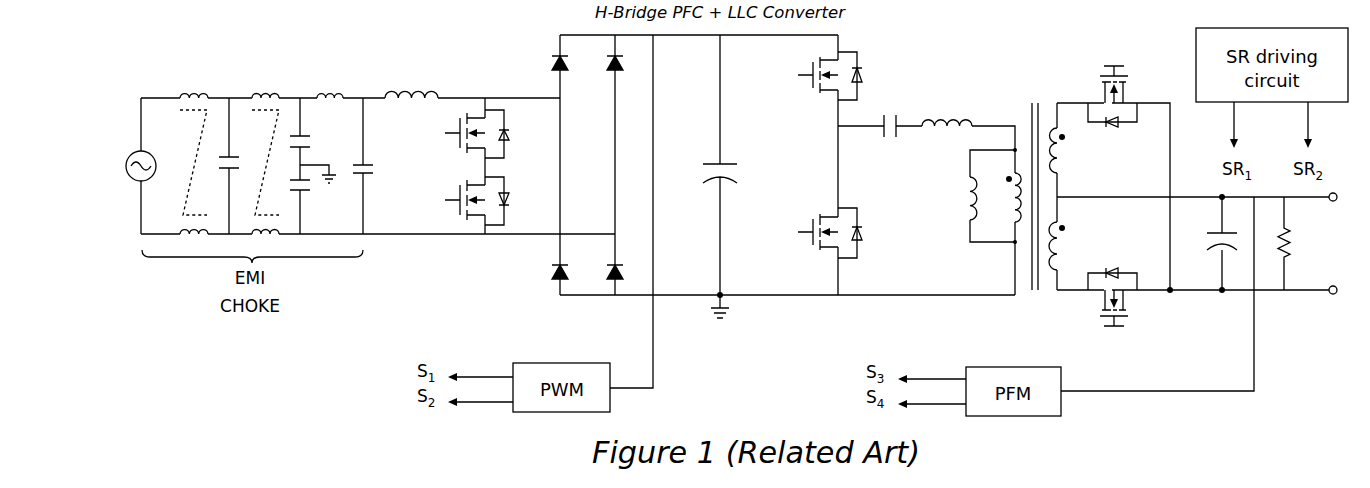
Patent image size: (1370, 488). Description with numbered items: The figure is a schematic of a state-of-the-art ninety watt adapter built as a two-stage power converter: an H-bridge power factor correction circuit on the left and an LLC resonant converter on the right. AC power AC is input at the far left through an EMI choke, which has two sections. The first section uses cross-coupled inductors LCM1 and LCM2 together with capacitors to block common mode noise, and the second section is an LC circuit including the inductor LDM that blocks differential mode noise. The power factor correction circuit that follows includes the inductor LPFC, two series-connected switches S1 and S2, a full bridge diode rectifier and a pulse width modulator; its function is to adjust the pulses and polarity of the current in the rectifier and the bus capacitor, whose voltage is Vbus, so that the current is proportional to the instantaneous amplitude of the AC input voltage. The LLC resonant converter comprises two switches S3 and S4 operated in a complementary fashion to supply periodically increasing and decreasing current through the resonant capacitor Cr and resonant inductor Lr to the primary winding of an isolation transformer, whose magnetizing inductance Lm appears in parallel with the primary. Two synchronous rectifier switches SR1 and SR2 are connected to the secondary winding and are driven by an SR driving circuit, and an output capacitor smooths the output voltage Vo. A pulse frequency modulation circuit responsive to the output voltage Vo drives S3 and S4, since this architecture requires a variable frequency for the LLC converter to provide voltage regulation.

The AC power input AC is at (124, 166).
The cross-coupled inductor LCM1 is at (189, 145).
The cross-coupled inductor LCM2 is at (255, 145).
The differential mode inductor LDM is at (324, 77).
The PFC inductor LPFC is at (411, 77).
The PFC switch S1 is at (463, 134).
The PFC switch S2 is at (463, 201).
The LLC primary switch S3 is at (820, 73).
The LLC primary switch S4 is at (821, 232).
The bus capacitor voltage Vbus is at (703, 165).
The resonant capacitor Cr is at (886, 112).
The resonant inductor Lr is at (947, 107).
The magnetizing inductance Lm is at (952, 198).
The synchronous rectifier switch SR1 is at (1095, 93).
The synchronous rectifier switch SR2 is at (1095, 300).
The output voltage Vo is at (1301, 245).